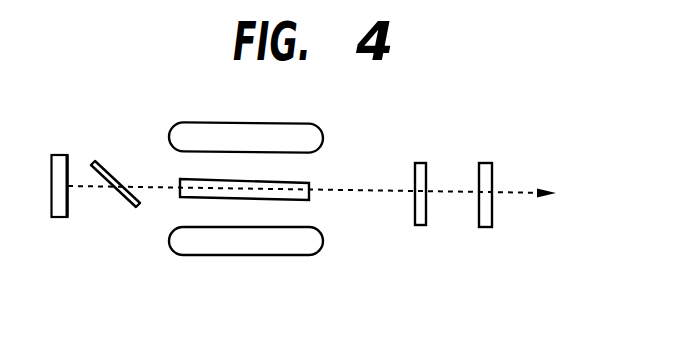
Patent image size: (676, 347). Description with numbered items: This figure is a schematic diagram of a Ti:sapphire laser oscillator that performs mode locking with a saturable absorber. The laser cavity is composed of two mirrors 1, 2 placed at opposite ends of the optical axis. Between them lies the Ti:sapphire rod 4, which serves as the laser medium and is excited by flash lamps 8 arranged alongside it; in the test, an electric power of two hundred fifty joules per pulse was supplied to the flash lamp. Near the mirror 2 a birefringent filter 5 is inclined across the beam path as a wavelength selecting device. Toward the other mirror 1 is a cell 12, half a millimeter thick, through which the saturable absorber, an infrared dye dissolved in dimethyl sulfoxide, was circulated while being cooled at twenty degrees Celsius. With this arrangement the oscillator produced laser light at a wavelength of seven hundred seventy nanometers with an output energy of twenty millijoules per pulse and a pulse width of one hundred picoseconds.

The mirror 1 is at (487, 163).
The mirror 2 is at (63, 155).
The Ti:sapphire rod 4 is at (309, 184).
The birefringent filter 5 is at (104, 164).
The flash lamp 8 is at (310, 126).
The cell 12 is at (421, 163).